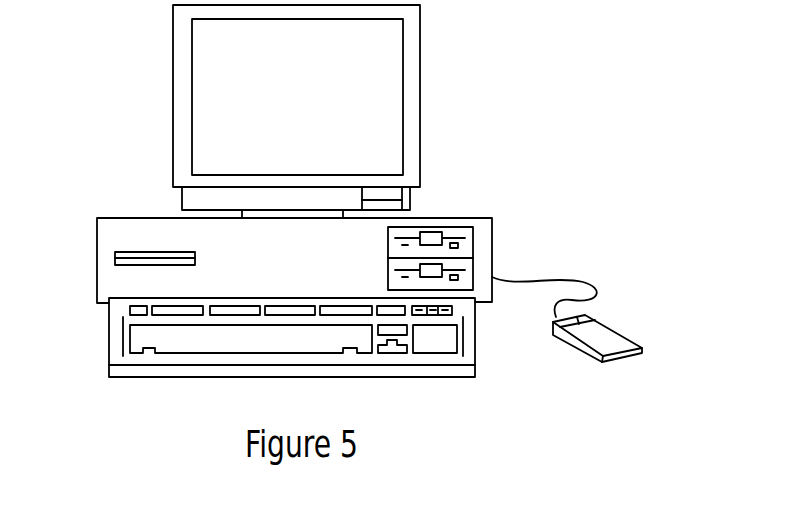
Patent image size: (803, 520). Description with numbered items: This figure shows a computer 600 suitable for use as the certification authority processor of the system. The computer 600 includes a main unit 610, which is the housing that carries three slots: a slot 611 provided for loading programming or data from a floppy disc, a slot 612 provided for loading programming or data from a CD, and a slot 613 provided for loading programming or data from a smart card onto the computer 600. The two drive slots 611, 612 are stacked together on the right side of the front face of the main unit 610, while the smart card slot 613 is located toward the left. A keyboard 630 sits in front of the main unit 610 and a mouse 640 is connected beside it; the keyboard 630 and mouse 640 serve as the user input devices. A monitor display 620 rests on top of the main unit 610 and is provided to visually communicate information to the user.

The computer 600 is at (614, 83).
The main unit 610 is at (127, 222).
The slot 611 is at (388, 250).
The slot 612 is at (388, 283).
The slot 613 is at (117, 255).
The monitor display 620 is at (413, 83).
The keyboard 630 is at (113, 339).
The mouse 640 is at (615, 330).